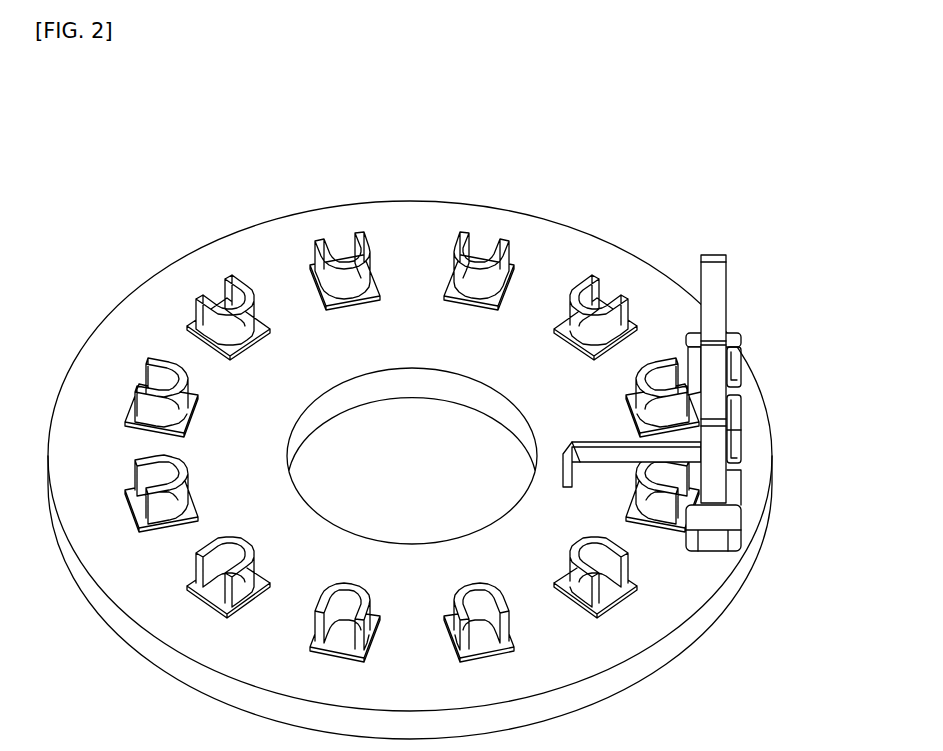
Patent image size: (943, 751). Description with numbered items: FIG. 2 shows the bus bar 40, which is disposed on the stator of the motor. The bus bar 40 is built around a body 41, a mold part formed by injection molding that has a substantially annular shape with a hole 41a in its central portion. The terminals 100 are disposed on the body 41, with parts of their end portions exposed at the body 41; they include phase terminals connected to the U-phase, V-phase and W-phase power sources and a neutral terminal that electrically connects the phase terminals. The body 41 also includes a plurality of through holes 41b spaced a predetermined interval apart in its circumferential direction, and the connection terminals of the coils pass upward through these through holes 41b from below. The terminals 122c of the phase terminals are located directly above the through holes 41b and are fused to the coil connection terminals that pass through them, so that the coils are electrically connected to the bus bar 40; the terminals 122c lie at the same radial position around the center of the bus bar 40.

The bus bar 40 is at (661, 110).
The body 41 is at (618, 263).
The central hole 41a is at (405, 384).
The through holes 41b is at (412, 401).
The terminals 122c is at (467, 237).
The terminals 100 is at (733, 290).